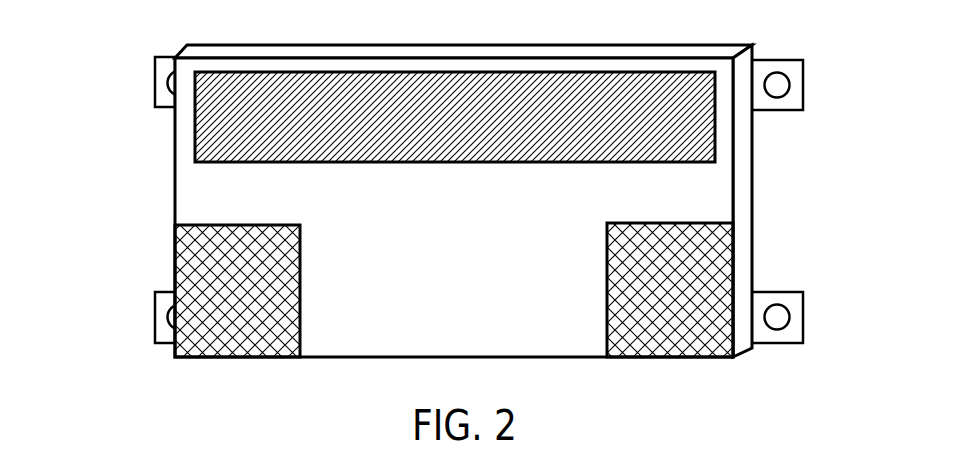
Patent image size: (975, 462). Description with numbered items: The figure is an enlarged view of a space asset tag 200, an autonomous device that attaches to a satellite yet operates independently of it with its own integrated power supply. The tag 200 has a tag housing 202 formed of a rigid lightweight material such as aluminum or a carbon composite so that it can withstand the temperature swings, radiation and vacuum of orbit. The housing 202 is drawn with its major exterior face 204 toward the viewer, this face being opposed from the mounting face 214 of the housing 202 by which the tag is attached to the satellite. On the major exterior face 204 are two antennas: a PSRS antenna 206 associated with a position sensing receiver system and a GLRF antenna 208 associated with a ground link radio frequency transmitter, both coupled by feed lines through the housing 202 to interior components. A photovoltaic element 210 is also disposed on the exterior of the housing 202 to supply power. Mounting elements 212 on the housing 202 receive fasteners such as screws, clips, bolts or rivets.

The space asset tag 200 is at (127, 173).
The tag housing 202 is at (505, 179).
The major exterior face 204 is at (454, 207).
The PSRS antenna 206 is at (237, 291).
The GLRF antenna 208 is at (670, 290).
The photovoltaic element 210 is at (455, 117).
The mounting elements 212 is at (157, 83).
The mounting face 214 is at (420, 26).